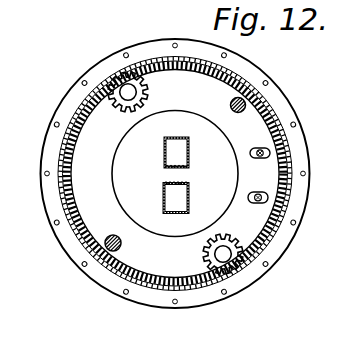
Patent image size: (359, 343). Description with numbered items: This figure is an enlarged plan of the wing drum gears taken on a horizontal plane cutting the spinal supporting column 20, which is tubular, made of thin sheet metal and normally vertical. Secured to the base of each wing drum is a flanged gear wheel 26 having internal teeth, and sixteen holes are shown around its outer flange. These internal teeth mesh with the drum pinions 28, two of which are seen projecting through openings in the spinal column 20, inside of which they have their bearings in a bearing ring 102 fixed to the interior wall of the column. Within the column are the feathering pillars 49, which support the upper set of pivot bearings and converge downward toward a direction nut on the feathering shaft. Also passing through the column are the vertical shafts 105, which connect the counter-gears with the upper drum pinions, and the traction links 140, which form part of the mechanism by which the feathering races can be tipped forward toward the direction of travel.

The flanged gear wheel 26 is at (77, 82).
The spinal supporting column 20 is at (72, 143).
The bearing ring 102 is at (118, 203).
The feathering pillar 49 is at (190, 149).
The drum pinion 28 is at (144, 86).
The vertical shaft 105 is at (230, 106).
The traction link 140 is at (259, 191).